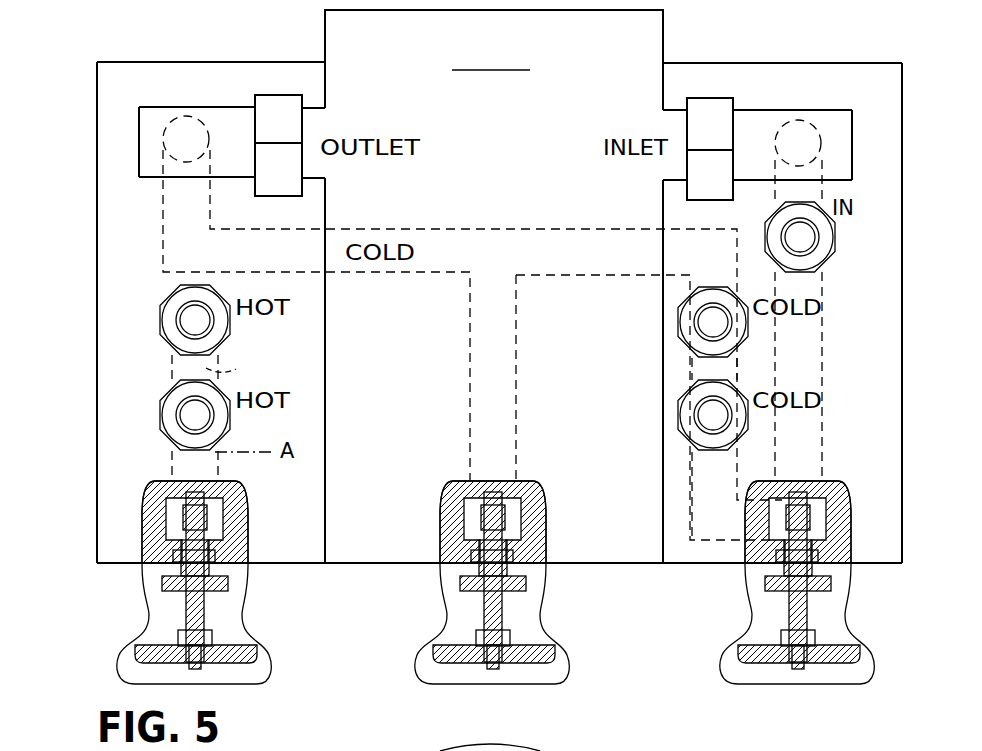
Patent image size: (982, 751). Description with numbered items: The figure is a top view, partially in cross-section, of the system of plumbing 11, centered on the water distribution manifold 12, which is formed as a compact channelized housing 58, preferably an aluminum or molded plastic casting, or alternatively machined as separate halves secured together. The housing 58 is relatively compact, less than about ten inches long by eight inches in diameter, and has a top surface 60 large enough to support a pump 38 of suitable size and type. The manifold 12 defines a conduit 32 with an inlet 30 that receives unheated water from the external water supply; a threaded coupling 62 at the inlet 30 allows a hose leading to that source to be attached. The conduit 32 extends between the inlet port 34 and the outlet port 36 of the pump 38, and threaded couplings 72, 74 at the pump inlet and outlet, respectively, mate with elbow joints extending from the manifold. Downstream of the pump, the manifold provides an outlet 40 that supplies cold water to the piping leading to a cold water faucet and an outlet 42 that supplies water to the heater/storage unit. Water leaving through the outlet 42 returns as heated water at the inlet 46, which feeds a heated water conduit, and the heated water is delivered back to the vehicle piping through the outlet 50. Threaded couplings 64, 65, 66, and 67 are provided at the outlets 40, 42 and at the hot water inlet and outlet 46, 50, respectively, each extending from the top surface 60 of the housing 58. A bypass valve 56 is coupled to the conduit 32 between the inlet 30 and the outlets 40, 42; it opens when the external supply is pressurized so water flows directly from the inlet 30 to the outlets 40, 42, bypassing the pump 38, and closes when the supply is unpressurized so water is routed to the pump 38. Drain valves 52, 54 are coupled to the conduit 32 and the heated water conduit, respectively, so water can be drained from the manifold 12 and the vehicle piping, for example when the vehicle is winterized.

The system of plumbing 11 is at (113, 42).
The water distribution manifold 12 is at (120, 479).
The inlet 30 is at (840, 237).
The conduit 32 is at (805, 345).
The inlet port of pump 34 is at (799, 125).
The outlet port of pump 36 is at (172, 139).
The pump 38 is at (648, 36).
The outlet 40 is at (676, 430).
The outlet 42 is at (676, 329).
The inlet 46 is at (161, 302).
The outlet 50 is at (156, 420).
The drain valve 52 is at (556, 652).
The drain valve 54 is at (257, 652).
The bypass valve 56 is at (864, 646).
The housing 58 is at (288, 557).
The top surface 60 is at (298, 512).
The threaded coupling 62 is at (826, 262).
The threaded coupling 64 is at (680, 311).
The threaded coupling 65 is at (688, 410).
The threaded coupling 66 is at (172, 325).
The threaded coupling 67 is at (216, 427).
The threaded coupling 72 is at (705, 110).
The threaded coupling 74 is at (269, 101).